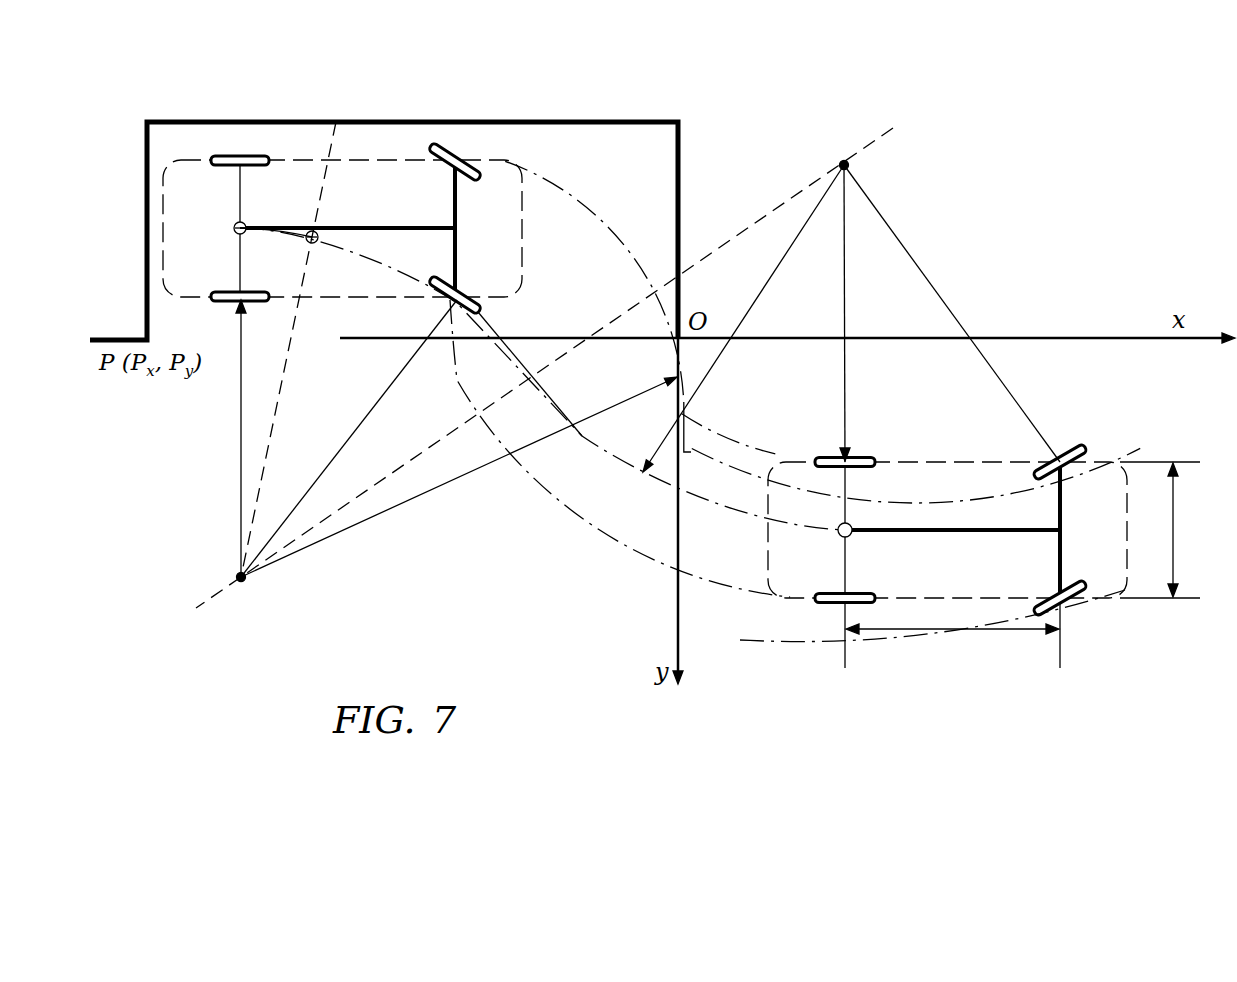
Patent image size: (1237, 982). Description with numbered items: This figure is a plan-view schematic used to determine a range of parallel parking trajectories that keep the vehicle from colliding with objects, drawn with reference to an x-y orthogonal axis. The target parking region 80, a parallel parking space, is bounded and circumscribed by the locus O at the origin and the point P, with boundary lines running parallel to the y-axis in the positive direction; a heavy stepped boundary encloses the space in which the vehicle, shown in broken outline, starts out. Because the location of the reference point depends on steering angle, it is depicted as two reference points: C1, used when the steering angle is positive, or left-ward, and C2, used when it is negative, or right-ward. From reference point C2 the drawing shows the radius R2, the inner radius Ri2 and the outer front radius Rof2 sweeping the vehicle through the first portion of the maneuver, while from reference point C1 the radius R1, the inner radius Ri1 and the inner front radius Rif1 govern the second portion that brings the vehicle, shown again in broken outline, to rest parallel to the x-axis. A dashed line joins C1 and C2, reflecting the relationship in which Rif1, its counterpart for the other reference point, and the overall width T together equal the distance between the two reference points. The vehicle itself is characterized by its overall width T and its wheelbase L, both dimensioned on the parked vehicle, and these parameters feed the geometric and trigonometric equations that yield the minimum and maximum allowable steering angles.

The target parking region 80 is at (598, 142).
The reference point C1 is at (600, 368).
The reference point C2 is at (312, 370).
The radius R1 is at (770, 291).
The inner radius Ri1 is at (856, 388).
The inner front radius Rif1 is at (1040, 410).
The radius R2 is at (337, 436).
The inner radius Ri2 is at (226, 486).
The outer front radius Rof2 is at (390, 518).
The overall width T is at (1175, 532).
The wheelbase L is at (957, 645).